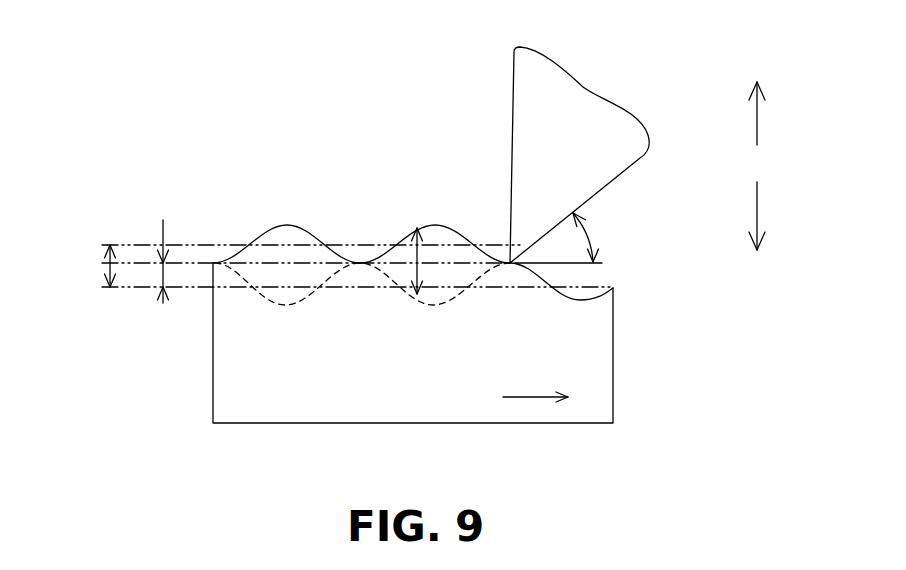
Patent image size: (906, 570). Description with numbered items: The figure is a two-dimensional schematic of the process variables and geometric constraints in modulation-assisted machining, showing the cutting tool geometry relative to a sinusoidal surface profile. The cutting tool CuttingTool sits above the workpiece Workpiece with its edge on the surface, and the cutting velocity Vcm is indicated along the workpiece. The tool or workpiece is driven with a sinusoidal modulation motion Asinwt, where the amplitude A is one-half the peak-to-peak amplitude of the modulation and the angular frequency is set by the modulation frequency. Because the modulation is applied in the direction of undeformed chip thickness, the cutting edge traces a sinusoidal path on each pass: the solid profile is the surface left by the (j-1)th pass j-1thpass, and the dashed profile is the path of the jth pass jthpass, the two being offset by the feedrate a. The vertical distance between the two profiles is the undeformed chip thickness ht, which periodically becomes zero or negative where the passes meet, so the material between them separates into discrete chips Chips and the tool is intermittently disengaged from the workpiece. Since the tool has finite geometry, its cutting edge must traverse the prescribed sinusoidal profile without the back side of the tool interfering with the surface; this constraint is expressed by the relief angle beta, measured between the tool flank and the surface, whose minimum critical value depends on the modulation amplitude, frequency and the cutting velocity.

The workpiece Workpiece is at (413, 343).
The (j-1)th pass j-1thpass is at (252, 245).
The jth pass jthpass is at (252, 287).
The chips Chips is at (425, 222).
The feedrate a is at (110, 267).
The modulation amplitude A is at (163, 230).
The undeformed chip thickness ht is at (418, 272).
The cutting tool CuttingTool is at (579, 155).
The relief angle beta is at (590, 233).
The cutting velocity Vcm is at (535, 384).
The sinusoidal modulation motion Asinwt is at (757, 166).